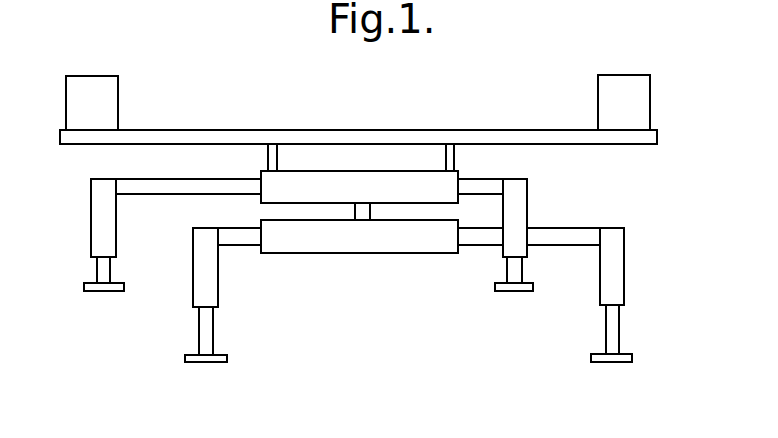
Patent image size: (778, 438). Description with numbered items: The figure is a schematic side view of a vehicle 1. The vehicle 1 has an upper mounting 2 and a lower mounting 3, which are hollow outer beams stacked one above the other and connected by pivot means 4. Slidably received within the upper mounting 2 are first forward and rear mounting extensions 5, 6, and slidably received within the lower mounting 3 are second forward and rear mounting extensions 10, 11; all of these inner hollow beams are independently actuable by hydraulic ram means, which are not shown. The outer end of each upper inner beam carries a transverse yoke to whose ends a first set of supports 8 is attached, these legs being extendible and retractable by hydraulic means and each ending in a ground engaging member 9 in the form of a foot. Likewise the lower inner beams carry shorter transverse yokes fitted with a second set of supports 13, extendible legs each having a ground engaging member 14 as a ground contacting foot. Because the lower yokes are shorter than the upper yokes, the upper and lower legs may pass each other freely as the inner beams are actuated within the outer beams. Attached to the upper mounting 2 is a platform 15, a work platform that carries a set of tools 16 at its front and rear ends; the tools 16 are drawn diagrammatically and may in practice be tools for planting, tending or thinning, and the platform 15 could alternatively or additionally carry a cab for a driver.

The vehicle 1 is at (80, 66).
The upper mounting 2 is at (360, 186).
The lower mounting 3 is at (408, 235).
The pivot means 4 is at (362, 212).
The first forward mounting extension 5 is at (483, 190).
The first rear mounting extension 6 is at (192, 187).
The first set of supports 8 is at (103, 223).
The ground engaging members 9 is at (85, 288).
The second forward mounting extension 10 is at (480, 243).
The second rear mounting extension 11 is at (240, 258).
The second set of supports 13 is at (200, 295).
The ground engaging members 14 is at (185, 358).
The platform 15 is at (500, 142).
The tools 16 is at (103, 95).